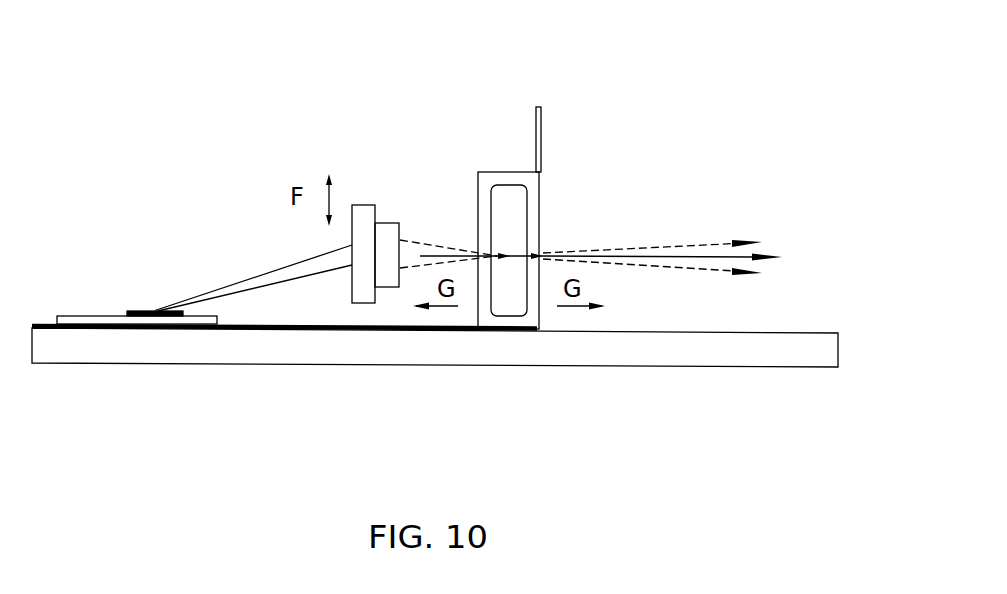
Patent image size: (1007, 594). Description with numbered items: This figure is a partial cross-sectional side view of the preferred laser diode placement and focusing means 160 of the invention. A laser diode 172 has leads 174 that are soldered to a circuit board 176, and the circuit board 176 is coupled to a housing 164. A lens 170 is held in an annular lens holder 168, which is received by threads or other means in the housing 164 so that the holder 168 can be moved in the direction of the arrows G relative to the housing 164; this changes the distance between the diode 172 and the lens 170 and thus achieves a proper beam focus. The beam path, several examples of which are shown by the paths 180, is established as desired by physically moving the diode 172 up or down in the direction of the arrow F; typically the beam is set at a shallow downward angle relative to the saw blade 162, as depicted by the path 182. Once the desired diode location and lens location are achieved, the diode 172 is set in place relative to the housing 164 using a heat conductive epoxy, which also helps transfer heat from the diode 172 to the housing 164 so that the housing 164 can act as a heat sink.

The laser diode assembly 160 is at (214, 255).
The saw blade 162 is at (552, 367).
The housing 164 is at (370, 331).
The annular lens holder 168 is at (541, 183).
The lens 170 is at (512, 250).
The laser diode 172 is at (385, 243).
The leads 174 is at (269, 285).
The circuit board 176 is at (70, 316).
The beam paths 180 is at (700, 242).
The beam path 182 is at (663, 267).